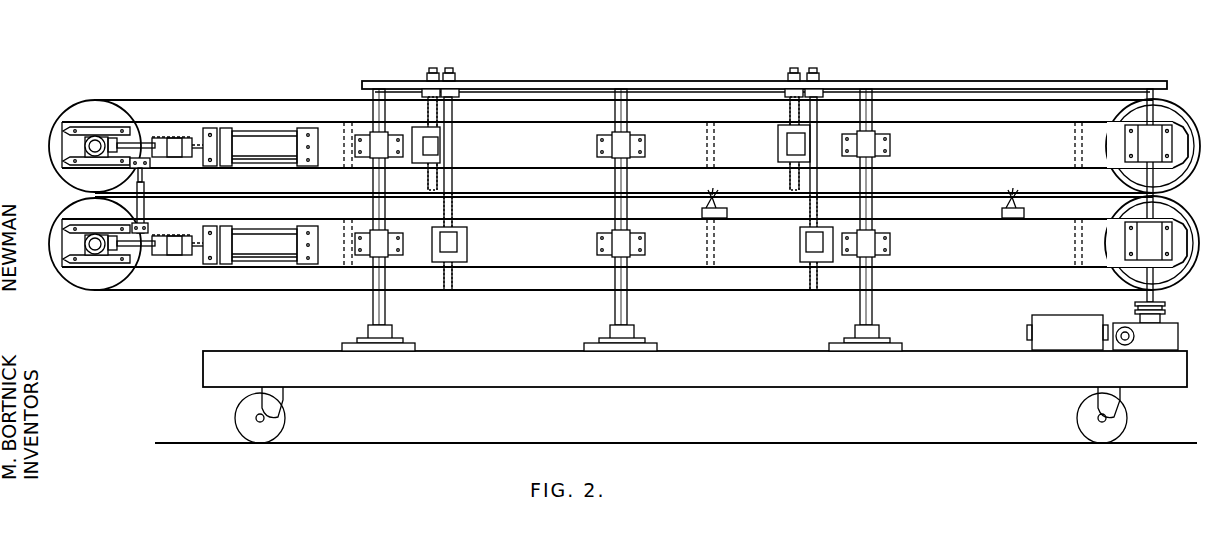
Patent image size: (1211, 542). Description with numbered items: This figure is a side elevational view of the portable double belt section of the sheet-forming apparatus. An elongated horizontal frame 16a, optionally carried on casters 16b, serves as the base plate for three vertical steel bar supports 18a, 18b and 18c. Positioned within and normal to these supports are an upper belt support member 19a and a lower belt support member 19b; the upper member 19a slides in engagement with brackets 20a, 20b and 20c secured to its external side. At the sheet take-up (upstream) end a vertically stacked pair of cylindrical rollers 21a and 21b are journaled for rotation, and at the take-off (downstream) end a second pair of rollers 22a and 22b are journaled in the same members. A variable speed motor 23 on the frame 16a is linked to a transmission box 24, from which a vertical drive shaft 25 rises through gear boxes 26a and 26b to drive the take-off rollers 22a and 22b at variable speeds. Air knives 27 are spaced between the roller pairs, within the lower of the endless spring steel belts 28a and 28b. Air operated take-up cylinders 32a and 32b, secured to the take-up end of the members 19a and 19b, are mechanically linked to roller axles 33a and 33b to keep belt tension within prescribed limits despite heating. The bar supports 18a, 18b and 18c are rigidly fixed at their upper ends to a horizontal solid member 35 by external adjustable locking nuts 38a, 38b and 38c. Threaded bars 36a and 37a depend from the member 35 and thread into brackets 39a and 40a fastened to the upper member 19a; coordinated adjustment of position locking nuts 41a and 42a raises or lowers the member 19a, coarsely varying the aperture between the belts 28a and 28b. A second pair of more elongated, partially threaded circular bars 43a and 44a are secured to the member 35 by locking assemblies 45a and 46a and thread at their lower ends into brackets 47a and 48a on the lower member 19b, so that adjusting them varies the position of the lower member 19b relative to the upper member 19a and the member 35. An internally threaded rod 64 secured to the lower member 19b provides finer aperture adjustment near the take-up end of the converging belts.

The elongated horizontal frame 16a is at (535, 375).
The casters 16b is at (242, 414).
The vertical steel bar support 18a is at (374, 301).
The vertical steel bar support 18b is at (616, 301).
The vertical steel bar support 18c is at (861, 304).
The upper belt support member 19a is at (516, 157).
The lower belt support member 19b is at (546, 257).
The bracket 20a is at (362, 134).
The bracket 20b is at (597, 148).
The bracket 20c is at (891, 146).
The cylindrical roller 21a is at (56, 122).
The cylindrical roller 21b is at (56, 222).
The take-off roller 22a is at (1167, 108).
The take-off roller 22b is at (1168, 272).
The variable speed motor 23 is at (1045, 322).
The transmission box 24 is at (1157, 340).
The drive shaft 25 is at (1140, 301).
The gear box 26a is at (1148, 146).
The gear box 26b is at (1148, 243).
The air knife 27 is at (705, 209).
The endless spring steel belt 28a is at (170, 99).
The endless spring steel belt 28b is at (195, 291).
The air operated take up cylinder 32a is at (250, 135).
The air operated take up cylinder 32b is at (252, 264).
The roller axle 33a is at (66, 146).
The roller axle 33b is at (66, 246).
The horizontal solid member 35 is at (518, 81).
The threaded bar 36a is at (430, 128).
The threaded bar 37a is at (788, 110).
The external adjustable locking nut 38a is at (377, 81).
The external adjustable locking nut 38b is at (619, 81).
The external adjustable locking nut 38c is at (866, 81).
The bracket 39a is at (428, 150).
The bracket 40a is at (791, 168).
The position locking nut 41a is at (431, 67).
The position locking nut 42a is at (793, 67).
The elongated threaded circular bar 43a is at (452, 178).
The elongated threaded circular bar 44a is at (817, 176).
The locking assembly 45a is at (450, 67).
The locking assembly 46a is at (813, 68).
The bracket 47a is at (439, 262).
The bracket 48a is at (812, 264).
The internally threaded rod 64 is at (144, 206).